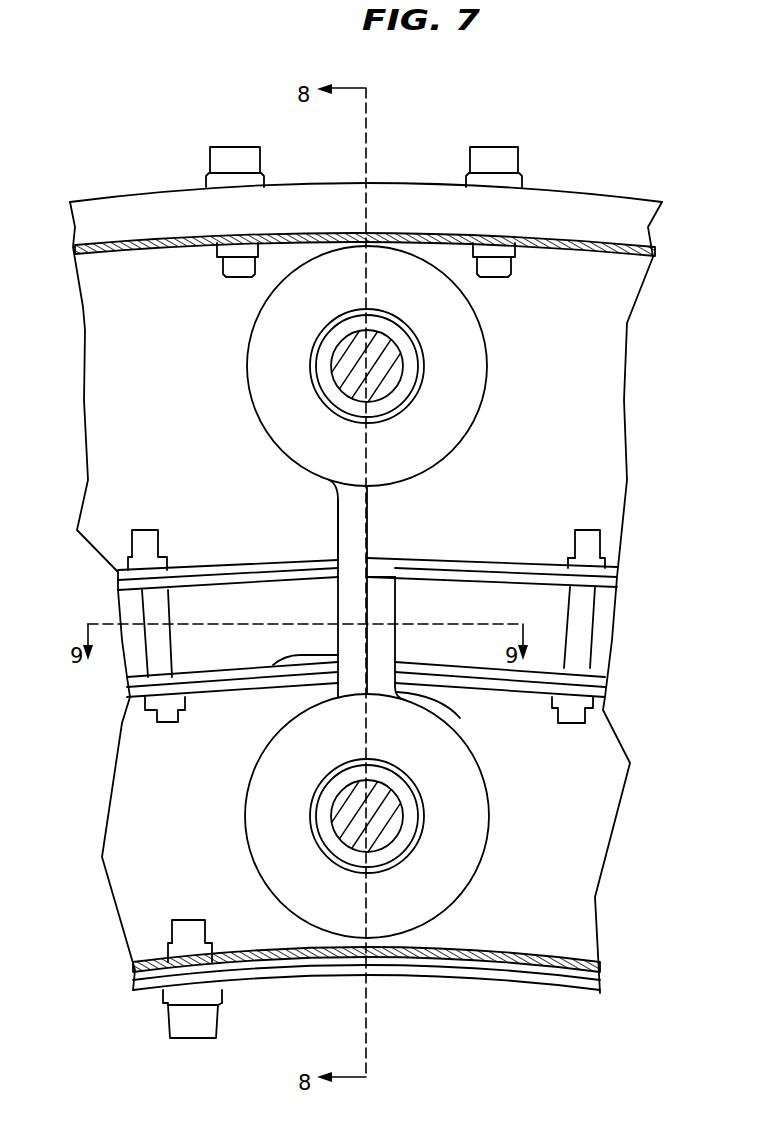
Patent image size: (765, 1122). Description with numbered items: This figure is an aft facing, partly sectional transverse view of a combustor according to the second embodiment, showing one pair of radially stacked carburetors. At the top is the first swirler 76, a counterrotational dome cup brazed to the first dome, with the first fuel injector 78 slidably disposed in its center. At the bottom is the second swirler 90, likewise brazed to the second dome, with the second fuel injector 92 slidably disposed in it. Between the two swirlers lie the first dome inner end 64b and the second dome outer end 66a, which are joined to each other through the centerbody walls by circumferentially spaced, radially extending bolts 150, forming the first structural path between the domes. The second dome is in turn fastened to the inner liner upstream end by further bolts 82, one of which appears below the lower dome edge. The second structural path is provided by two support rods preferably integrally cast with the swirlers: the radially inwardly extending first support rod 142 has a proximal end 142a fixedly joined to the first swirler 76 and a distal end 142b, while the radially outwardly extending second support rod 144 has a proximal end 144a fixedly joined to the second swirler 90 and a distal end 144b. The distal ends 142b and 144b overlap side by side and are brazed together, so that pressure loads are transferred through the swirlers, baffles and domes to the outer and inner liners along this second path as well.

The first swirler 76 is at (247, 350).
The first fuel injector 78 is at (343, 378).
The second swirler 90 is at (248, 793).
The second fuel injector 92 is at (350, 843).
The first support rod 142 is at (337, 617).
The proximal end of first support rod 142a is at (333, 512).
The distal end of first support rod 142b is at (278, 688).
The second support rod 144 is at (400, 643).
The proximal end of second support rod 144a is at (460, 718).
The distal end of second support rod 144b is at (398, 597).
The first dome inner end 64b is at (198, 568).
The second dome outer end 66a is at (205, 697).
The bolts 150 is at (138, 613).
The bolts 82 is at (180, 1038).